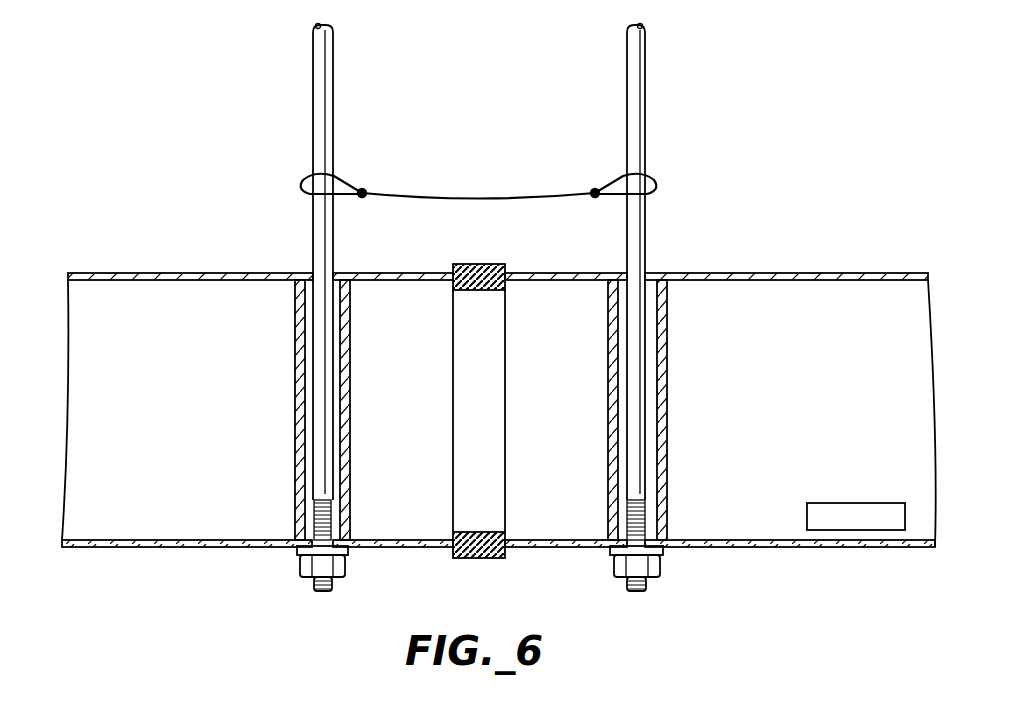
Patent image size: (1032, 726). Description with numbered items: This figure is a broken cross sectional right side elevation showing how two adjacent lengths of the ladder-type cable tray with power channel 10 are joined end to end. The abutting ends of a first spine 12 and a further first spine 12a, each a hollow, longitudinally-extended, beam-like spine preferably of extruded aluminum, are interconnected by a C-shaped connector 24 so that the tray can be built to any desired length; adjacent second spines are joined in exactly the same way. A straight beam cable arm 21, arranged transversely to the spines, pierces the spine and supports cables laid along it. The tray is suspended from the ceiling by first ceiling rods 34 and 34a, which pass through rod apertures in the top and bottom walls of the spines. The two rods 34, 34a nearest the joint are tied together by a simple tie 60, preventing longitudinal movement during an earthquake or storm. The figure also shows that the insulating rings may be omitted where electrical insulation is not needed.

The ladder-type cable tray with power channel 10 is at (815, 98).
The first spine 12 is at (499, 390).
The first spine 12a is at (222, 272).
The cable arm 21 is at (830, 503).
The C-shaped connector 24 is at (483, 405).
The first ceiling rod 34 is at (640, 92).
The first ceiling rod 34a is at (325, 90).
The tie 60 is at (452, 195).